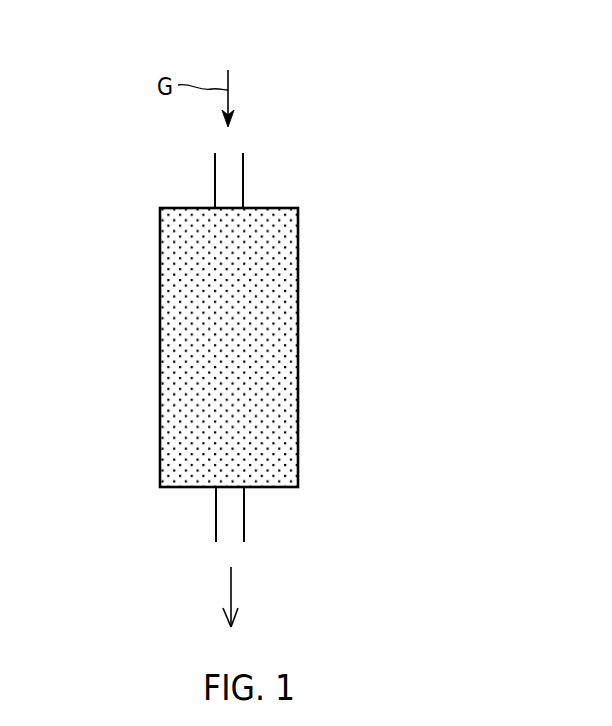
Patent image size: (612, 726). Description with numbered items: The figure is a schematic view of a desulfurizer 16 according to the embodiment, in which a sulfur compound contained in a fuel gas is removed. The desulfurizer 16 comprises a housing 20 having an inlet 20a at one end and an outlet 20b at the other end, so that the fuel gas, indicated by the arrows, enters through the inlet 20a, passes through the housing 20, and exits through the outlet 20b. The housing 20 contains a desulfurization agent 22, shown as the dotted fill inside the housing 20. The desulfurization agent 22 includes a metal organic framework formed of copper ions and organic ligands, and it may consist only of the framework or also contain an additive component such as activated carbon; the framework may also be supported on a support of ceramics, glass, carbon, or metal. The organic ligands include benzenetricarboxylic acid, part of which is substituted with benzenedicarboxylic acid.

The desulfurizer 16 is at (315, 98).
The housing 20 is at (160, 282).
The inlet 20a is at (243, 171).
The outlet 20b is at (244, 514).
The desulfurization agent 22 is at (183, 357).